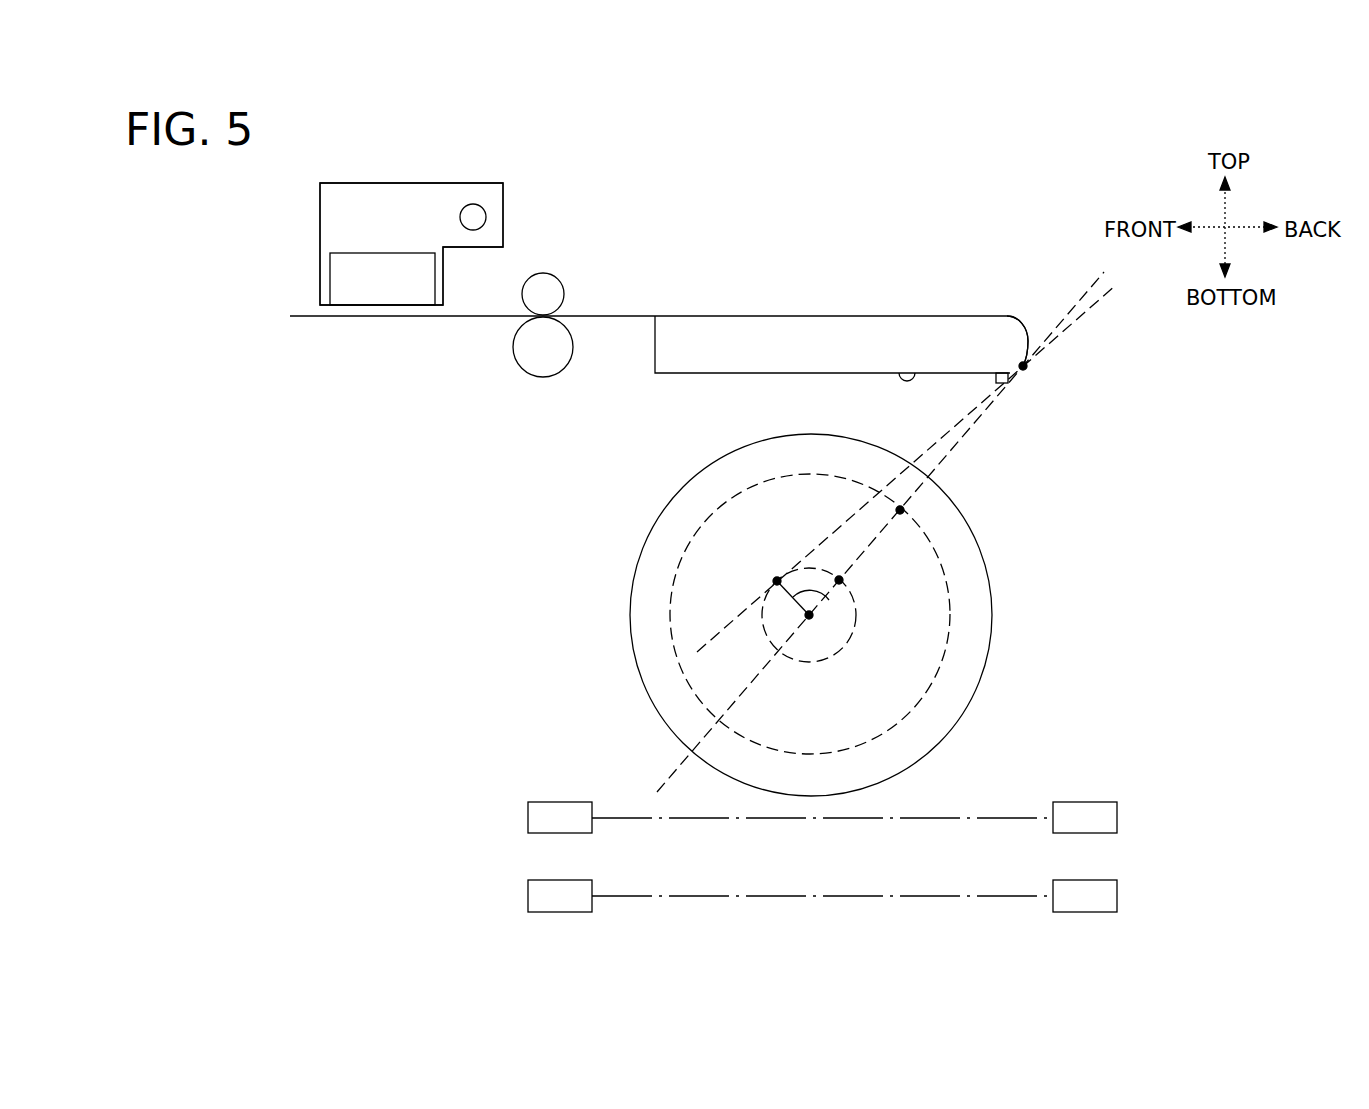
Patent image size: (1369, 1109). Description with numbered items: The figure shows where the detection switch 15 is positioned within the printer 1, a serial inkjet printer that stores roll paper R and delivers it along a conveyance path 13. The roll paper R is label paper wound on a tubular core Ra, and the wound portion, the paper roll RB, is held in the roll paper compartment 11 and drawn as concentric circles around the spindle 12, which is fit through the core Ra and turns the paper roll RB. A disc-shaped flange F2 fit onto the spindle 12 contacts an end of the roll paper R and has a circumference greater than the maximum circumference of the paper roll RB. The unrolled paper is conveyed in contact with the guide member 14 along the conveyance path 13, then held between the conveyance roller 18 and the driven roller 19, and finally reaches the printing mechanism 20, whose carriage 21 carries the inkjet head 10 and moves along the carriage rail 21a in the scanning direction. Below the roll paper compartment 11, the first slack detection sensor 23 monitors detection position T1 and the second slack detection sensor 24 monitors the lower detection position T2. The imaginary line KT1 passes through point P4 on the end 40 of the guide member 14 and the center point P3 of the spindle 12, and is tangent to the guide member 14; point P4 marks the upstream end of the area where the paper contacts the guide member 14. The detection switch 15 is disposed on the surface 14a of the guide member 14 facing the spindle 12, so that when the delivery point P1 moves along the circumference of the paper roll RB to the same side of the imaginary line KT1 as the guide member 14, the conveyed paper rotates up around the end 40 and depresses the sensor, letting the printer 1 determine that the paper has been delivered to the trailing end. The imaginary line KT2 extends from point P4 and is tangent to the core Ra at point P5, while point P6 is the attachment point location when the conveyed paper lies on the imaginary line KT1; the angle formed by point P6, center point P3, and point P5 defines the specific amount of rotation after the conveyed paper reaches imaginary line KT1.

The printer 1 is at (807, 201).
The inkjet head 10 is at (372, 283).
The roll paper compartment 11 is at (617, 503).
The spindle 12 is at (820, 637).
The conveyance path 13 is at (800, 316).
The guide member 14 is at (853, 335).
The surface 14a is at (915, 380).
The detection switch 15 is at (995, 377).
The conveyance roller 18 is at (537, 358).
The driven roller 19 is at (567, 293).
The printing mechanism 20 is at (409, 180).
The carriage 21 is at (342, 227).
The carriage rail 21a is at (486, 217).
The first slack detection sensor 23 is at (527, 817).
The second slack detection sensor 24 is at (527, 895).
The end of the guide member 40 is at (988, 337).
The delivery point P1 is at (904, 510).
The center point P3 is at (813, 617).
The point on the guide member P4 is at (1026, 369).
The point P5 is at (777, 578).
The point P6 is at (843, 580).
The imaginary line KT1 is at (968, 440).
The imaginary line KT2 is at (939, 440).
The roll paper R is at (672, 587).
The paper roll RB is at (697, 620).
The core Ra is at (662, 722).
The flange F2 is at (642, 550).
The detection position T1 is at (1000, 815).
The detection position T2 is at (950, 896).